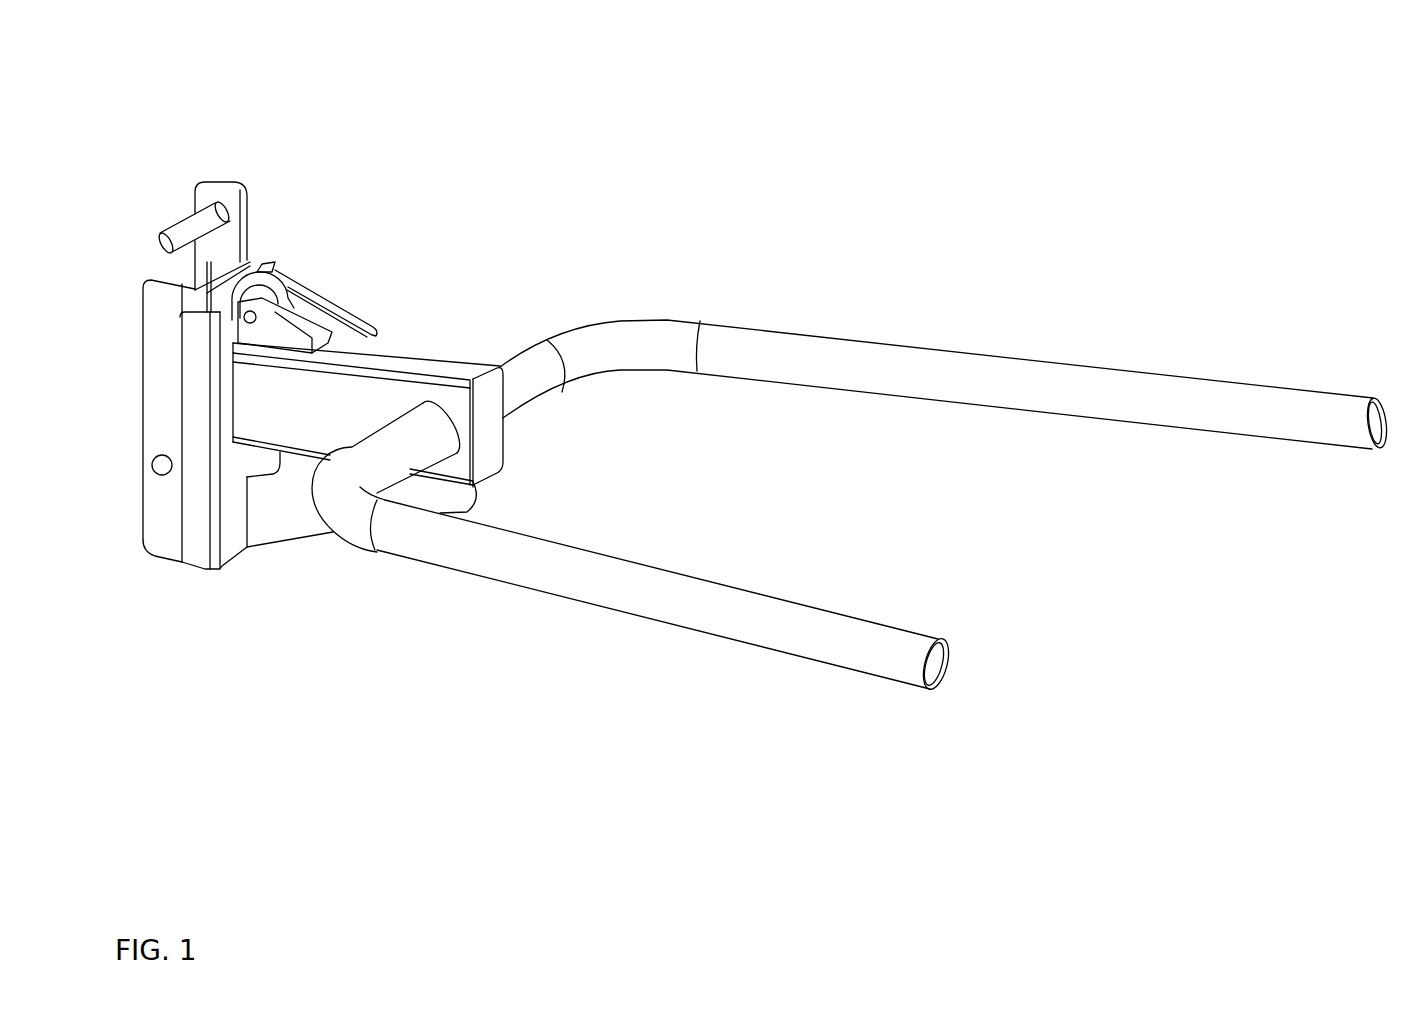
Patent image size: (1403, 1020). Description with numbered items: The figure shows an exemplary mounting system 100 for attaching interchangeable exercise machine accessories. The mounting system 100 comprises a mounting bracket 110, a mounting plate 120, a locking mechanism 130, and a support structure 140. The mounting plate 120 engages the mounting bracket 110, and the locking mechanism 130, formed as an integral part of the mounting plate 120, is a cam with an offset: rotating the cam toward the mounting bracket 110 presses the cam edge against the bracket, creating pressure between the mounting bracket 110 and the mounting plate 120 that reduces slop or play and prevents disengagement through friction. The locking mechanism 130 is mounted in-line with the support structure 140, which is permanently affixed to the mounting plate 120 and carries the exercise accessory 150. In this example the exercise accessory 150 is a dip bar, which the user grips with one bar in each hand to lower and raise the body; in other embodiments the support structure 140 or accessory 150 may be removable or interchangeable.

The mounting system 100 is at (1203, 835).
The mounting bracket 110 is at (208, 160).
The mounting plate 120 is at (233, 580).
The locking mechanism 130 is at (316, 270).
The support structure 140 is at (427, 336).
The exercise accessory 150 is at (900, 306).